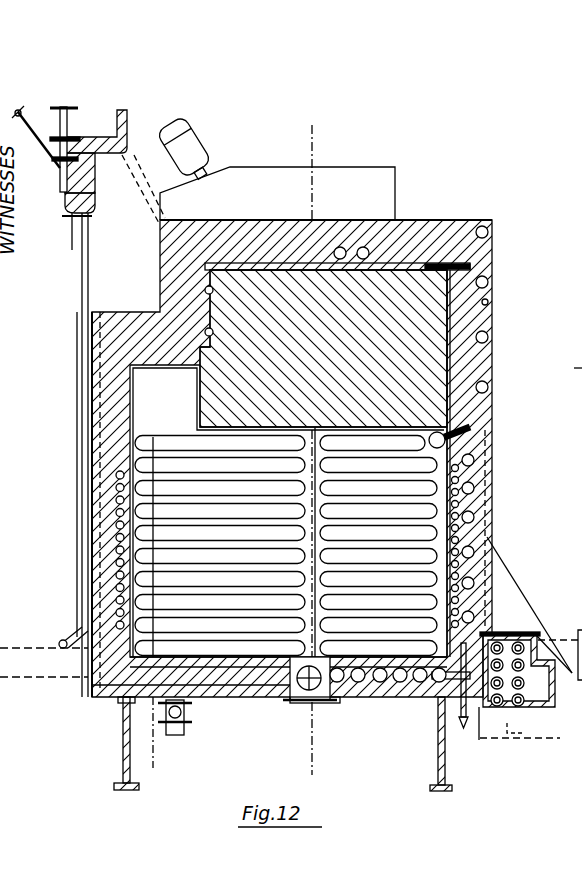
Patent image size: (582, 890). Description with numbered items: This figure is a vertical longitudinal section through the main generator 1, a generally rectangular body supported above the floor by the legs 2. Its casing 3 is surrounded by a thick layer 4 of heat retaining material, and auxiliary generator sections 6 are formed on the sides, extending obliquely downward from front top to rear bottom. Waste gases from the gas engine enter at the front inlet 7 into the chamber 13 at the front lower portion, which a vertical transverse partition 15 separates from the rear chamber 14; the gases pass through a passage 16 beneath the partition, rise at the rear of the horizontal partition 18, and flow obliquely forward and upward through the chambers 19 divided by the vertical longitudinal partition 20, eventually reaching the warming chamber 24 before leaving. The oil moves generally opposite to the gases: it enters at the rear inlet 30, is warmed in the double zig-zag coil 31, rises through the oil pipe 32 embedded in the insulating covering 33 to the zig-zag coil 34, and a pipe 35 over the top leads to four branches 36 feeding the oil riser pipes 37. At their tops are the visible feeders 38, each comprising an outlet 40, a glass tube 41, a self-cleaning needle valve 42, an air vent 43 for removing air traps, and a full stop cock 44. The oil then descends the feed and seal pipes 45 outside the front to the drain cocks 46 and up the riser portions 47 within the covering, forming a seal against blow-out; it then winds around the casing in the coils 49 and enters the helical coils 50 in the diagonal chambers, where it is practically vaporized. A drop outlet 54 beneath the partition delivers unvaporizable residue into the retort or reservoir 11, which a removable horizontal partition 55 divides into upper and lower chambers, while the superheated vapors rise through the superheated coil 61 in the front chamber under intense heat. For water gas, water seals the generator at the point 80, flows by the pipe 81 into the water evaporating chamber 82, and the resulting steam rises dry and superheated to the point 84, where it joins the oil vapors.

The main generator 1 is at (468, 275).
The legs 2 is at (122, 745).
The casing 3 is at (470, 282).
The layer of heat retaining material 4 is at (92, 346).
The auxiliary generator sections 6 is at (534, 608).
The front inlet 7 is at (44, 675).
The reservoir (retort) 11 is at (322, 692).
The chamber 13 is at (147, 472).
The rear chamber 14 is at (508, 508).
The vertical transverse partition 15 is at (339, 684).
The passage 16 is at (305, 672).
The horizontal partition 18 is at (292, 426).
The chamber 19 is at (568, 367).
The vertical longitudinal partition 20 is at (430, 320).
The warming chamber 24 is at (527, 738).
The rear inlet (oil pipe inlet end) 30 is at (546, 702).
The double zig-zag coil of pipe 31 is at (520, 640).
The oil pipe 32 is at (466, 531).
The insulating covering 33 is at (470, 379).
The zig-zag coil 34 is at (484, 342).
The pipe 35 is at (418, 222).
The branches 36 is at (140, 210).
The oil riser pipes 37 is at (120, 136).
The visible feeders 38 is at (58, 208).
The outlet 40 is at (128, 120).
The glass tube 41 is at (52, 160).
The self-cleaning needle valve 42 is at (40, 125).
The air vent 43 is at (69, 112).
The full stop cock 44 is at (70, 236).
The feed and seal pipes 45 is at (82, 288).
The drain cocks 46 is at (60, 641).
The riser portions 47 is at (95, 398).
The coils 49 is at (116, 492).
The helical coils 50 is at (505, 557).
The drop outlet 54 is at (309, 702).
The horizontal partition 55 is at (300, 703).
The superheated coil 61 is at (240, 626).
The point 80 is at (78, 452).
The pipe 81 is at (82, 660).
The water evaporating chamber 82 is at (266, 668).
The point 84 is at (470, 428).